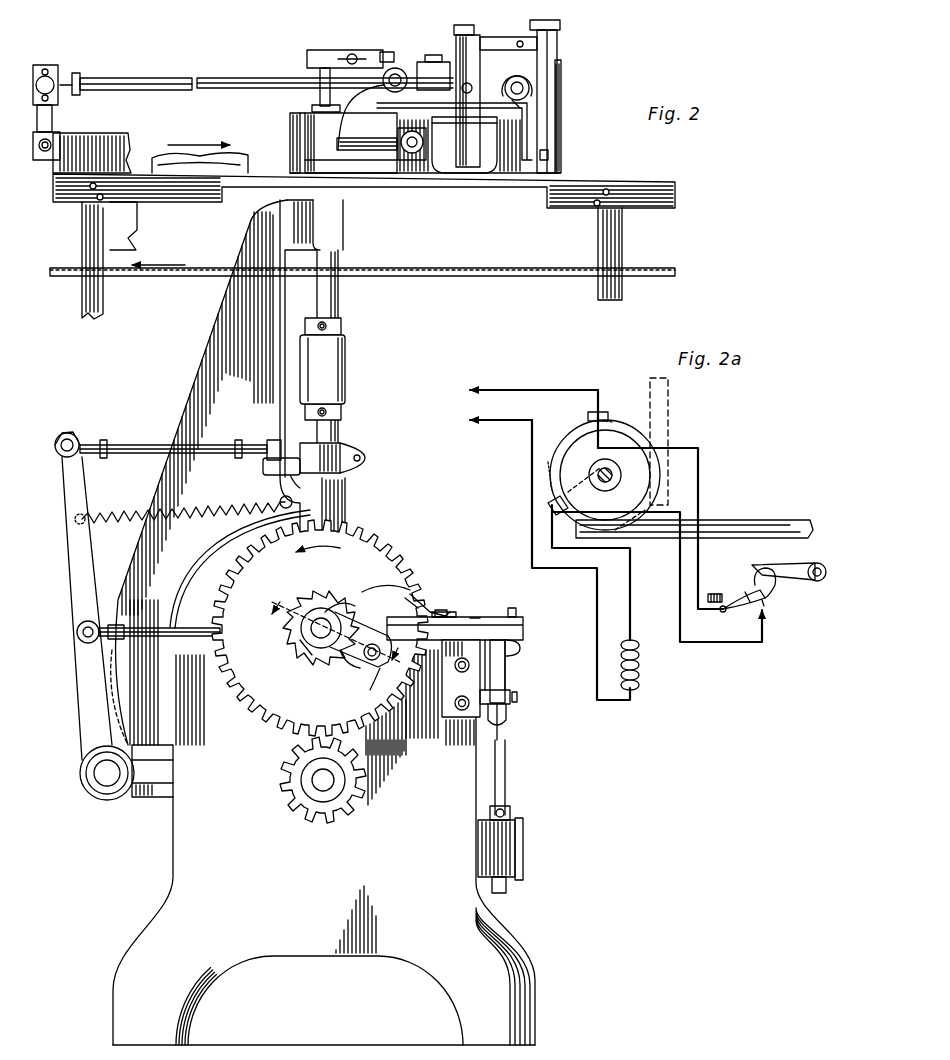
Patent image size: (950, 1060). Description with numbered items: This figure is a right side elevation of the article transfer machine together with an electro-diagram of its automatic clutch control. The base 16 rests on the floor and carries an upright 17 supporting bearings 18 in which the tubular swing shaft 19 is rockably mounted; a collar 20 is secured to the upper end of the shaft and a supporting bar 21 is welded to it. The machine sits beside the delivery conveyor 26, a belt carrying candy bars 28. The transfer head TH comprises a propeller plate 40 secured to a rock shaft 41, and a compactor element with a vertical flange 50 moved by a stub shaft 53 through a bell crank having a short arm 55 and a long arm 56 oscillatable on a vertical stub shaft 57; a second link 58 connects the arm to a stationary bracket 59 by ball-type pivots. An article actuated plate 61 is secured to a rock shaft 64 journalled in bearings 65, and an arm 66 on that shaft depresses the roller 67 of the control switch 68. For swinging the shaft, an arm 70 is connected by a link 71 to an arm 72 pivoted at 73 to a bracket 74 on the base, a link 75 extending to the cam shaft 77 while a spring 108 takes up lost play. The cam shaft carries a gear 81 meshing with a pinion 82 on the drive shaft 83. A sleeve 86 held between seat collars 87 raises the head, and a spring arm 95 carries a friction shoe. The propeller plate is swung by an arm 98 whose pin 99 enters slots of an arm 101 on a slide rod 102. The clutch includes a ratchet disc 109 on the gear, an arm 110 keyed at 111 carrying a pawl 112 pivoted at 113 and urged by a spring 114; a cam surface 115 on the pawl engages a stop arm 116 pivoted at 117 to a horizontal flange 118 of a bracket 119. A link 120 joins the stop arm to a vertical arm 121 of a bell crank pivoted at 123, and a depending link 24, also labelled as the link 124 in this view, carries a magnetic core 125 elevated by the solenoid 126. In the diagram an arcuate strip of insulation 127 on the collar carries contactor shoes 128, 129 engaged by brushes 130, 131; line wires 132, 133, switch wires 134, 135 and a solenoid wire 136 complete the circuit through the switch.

In FIG. 2, the base 16 is at (323, 960).
In FIG. 2, the upright 17 is at (190, 568).
In FIG. 2, the bearings 18 is at (343, 235).
In FIG. 2, the tubular swing shaft 19 is at (340, 300).
In FIG. 2, the collar 20 is at (280, 190).
In FIG. 2A, the collar 20 is at (660, 475).
In FIG. 2A, the supporting bar 21 is at (665, 392).
In FIG. 2, the link 24 is at (410, 160).
In FIG. 2, the delivery conveyor 26 is at (600, 178).
In FIG. 2, the candy bars 28 is at (243, 150).
In FIG. 2, the propeller plate 40 is at (330, 125).
In FIG. 2, the rock shaft 41 is at (430, 58).
In FIG. 2, the vertical flange 50 is at (478, 165).
In FIG. 2, the stub shaft 53 is at (454, 22).
In FIG. 2, the short arm 55 is at (557, 55).
In FIG. 2, the long arm 56 is at (456, 60).
In FIG. 2, the vertical stub shaft 57 is at (560, 25).
In FIG. 2, the second link 58 is at (140, 88).
In FIG. 2, the stationary bracket 59 is at (128, 233).
In FIG. 2, the article actuated plate 61 is at (560, 145).
In FIG. 2, the rock shaft 64 is at (531, 85).
In FIG. 2A, the rock shaft 64 is at (810, 582).
In FIG. 2, the bearings 65 is at (532, 118).
In FIG. 2A, the arm 66 is at (805, 555).
In FIG. 2A, the roller 67 is at (765, 600).
In FIG. 2A, the control switch 68 is at (775, 612).
In FIG. 2, the arm 70 is at (295, 440).
In FIG. 2, the link 71 is at (165, 445).
In FIG. 2, the arm 72 is at (80, 658).
In FIG. 2, the pivot 73 is at (107, 786).
In FIG. 2, the bracket 74 is at (150, 795).
In FIG. 2, the link 75 is at (162, 608).
In FIG. 2, the cam shaft 77 is at (311, 628).
In FIG. 2, the gear 81 is at (395, 745).
In FIG. 2, the pinion 82 is at (323, 820).
In FIG. 2, the drive shaft 83 is at (318, 785).
In FIG. 2, the sleeve 86 is at (345, 368).
In FIG. 2, the seat collars 87 is at (341, 326).
In FIG. 2, the spring arm 95 is at (420, 600).
In FIG. 2, the arm 98 is at (392, 48).
In FIG. 2, the pin 99 is at (386, 70).
In FIG. 2, the arm 101 is at (322, 35).
In FIG. 2, the slide rod 102 is at (312, 76).
In FIG. 2A, the slide rod 102 is at (612, 470).
In FIG. 2, the spring 108 is at (185, 502).
In FIG. 2, the ratchet disc 109 is at (340, 618).
In FIG. 2, the arm 110 is at (345, 650).
In FIG. 2, the key 111 is at (410, 590).
In FIG. 2, the pawl 112 is at (355, 668).
In FIG. 2, the pivot 113 is at (377, 686).
In FIG. 2, the spring 114 is at (305, 655).
In FIG. 2, the cam surface 115 is at (372, 600).
In FIG. 2, the stop arm 116 is at (440, 620).
In FIG. 2, the pivot 117 is at (465, 635).
In FIG. 2, the horizontal flange 118 is at (505, 615).
In FIG. 2, the bracket 119 is at (455, 690).
In FIG. 2, the link 120 is at (520, 650).
In FIG. 2, the vertical arm 121 is at (505, 672).
In FIG. 2, the pivot 123 is at (518, 700).
In FIG. 2, the rod 124 is at (505, 770).
In FIG. 2, the magnetic core 125 is at (506, 890).
In FIG. 2, the solenoid 126 is at (510, 838).
In FIG. 2A, the solenoid 126 is at (640, 672).
In FIG. 2, the arcuate strip of insulation 127 is at (300, 112).
In FIG. 2A, the arcuate strip of insulation 127 is at (568, 432).
In FIG. 2A, the contactor shoe 128 is at (620, 414).
In FIG. 2A, the contactor shoe 129 is at (617, 509).
In FIG. 2A, the contactor brush 130 is at (583, 410).
In FIG. 2, the contactor brush 131 is at (290, 118).
In FIG. 2A, the contactor brush 131 is at (548, 506).
In FIG. 2A, the line wire 132 is at (520, 388).
In FIG. 2A, the line wire 133 is at (516, 428).
In FIG. 2A, the switch wire 134 is at (660, 596).
In FIG. 2A, the switch wire 135 is at (706, 560).
In FIG. 2A, the solenoid wire 136 is at (630, 622).
In FIG. 2, the transfer head TH is at (560, 105).